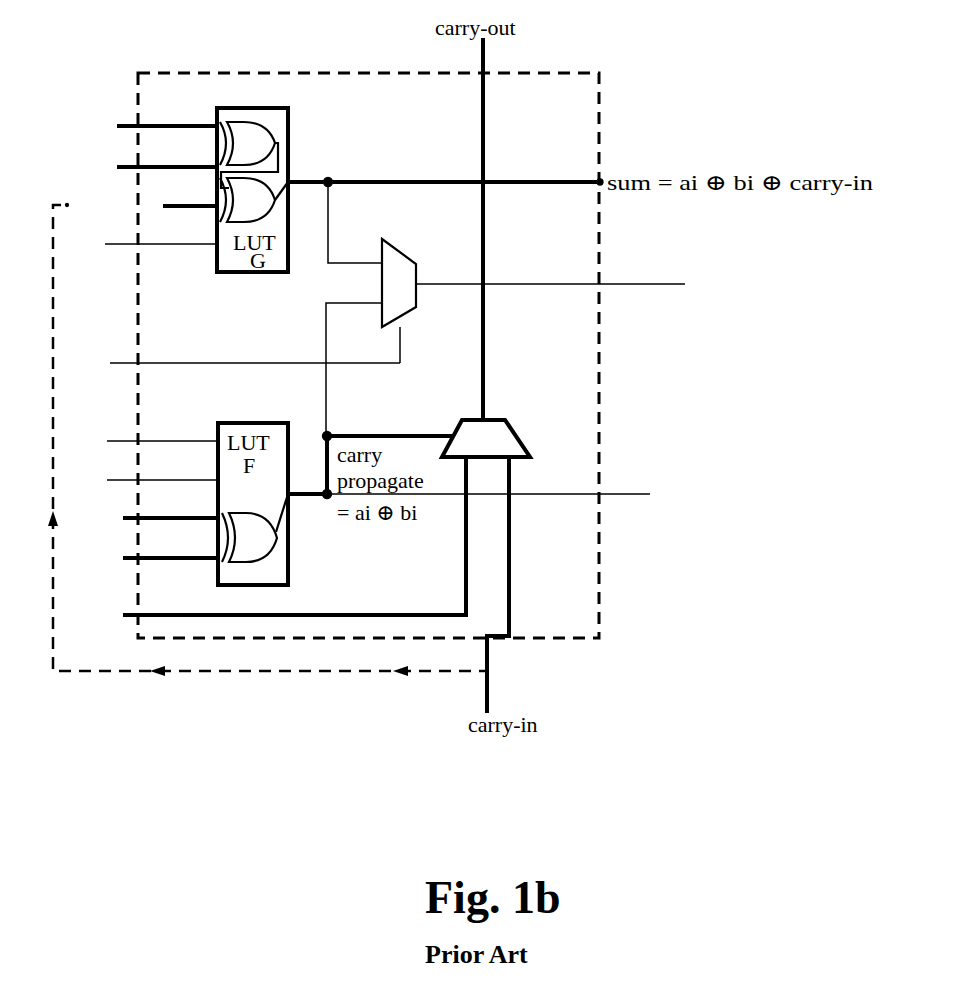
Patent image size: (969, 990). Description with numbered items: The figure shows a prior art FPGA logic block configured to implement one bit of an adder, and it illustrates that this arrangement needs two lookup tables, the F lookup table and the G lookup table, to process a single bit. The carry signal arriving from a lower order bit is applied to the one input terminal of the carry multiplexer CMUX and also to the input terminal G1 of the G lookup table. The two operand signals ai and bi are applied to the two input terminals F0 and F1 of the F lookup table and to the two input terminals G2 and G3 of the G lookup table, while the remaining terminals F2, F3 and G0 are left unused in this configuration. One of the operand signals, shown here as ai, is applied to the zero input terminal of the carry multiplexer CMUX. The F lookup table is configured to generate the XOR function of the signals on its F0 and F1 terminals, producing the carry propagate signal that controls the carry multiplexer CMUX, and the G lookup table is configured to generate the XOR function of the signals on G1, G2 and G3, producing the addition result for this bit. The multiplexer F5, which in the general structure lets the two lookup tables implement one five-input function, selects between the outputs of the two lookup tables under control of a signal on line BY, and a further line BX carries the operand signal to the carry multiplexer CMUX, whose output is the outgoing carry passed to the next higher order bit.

The input terminal G3 is at (157, 121).
The input terminal G2 is at (157, 162).
The input terminal G1 is at (144, 202).
The input terminal G0 is at (161, 235).
The multiplexer F5 is at (505, 309).
The BY input line BY is at (255, 351).
The input terminal F3 is at (162, 431).
The input terminal F2 is at (162, 470).
The input terminal F1 is at (160, 512).
The input terminal F0 is at (160, 552).
The BX input line (ai) BX is at (284, 541).
The carry multiplexer CMUX is at (515, 563).